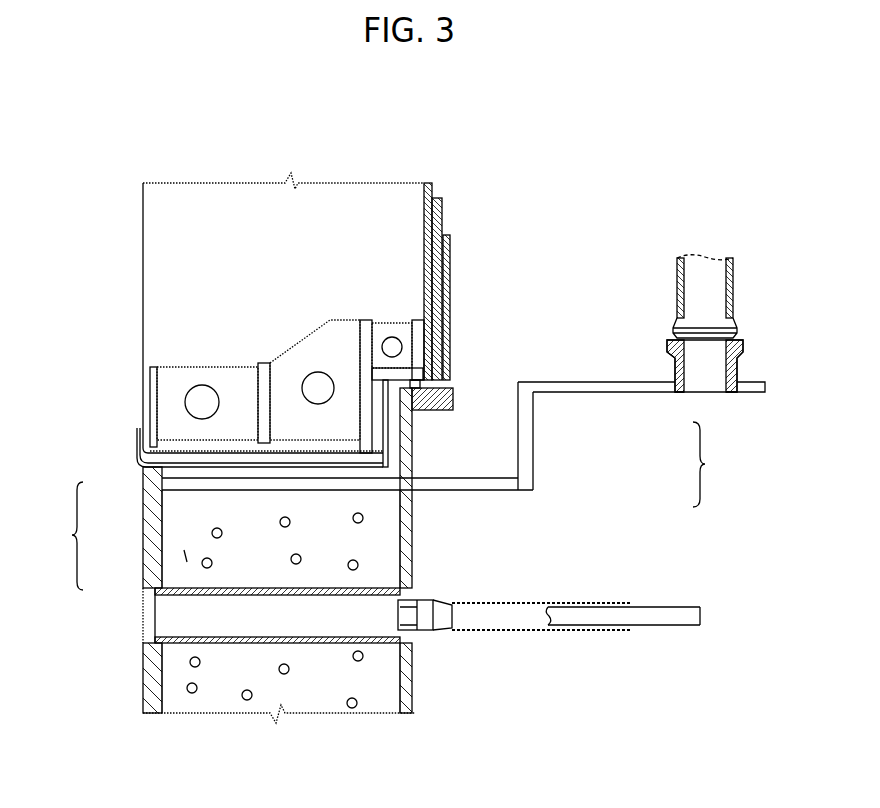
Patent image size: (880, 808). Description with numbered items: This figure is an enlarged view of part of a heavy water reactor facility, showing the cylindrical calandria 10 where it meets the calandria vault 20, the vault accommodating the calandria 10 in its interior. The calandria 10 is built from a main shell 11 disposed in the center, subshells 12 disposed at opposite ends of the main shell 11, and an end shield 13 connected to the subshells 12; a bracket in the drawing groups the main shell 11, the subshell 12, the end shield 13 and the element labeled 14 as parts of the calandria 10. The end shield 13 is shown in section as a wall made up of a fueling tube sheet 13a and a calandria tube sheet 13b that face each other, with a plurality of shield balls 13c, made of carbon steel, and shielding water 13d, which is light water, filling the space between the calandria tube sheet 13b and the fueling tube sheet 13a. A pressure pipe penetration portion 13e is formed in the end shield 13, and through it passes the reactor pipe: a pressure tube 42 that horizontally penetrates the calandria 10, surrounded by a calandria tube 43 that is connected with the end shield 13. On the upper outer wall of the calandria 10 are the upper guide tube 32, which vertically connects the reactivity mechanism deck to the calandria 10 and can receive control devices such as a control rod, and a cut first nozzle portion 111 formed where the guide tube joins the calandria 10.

The calandria 10 is at (582, 451).
The main shell 11 is at (627, 388).
The subshell 12 is at (493, 488).
The end shield 13 is at (372, 555).
The fueling tube sheet 13a is at (162, 485).
The calandria tube sheet 13b is at (397, 677).
The shield balls 13c is at (212, 533).
The shielding water 13d is at (185, 555).
The pressure pipe penetration portion 13e is at (212, 588).
The vertical duct section 14 is at (527, 435).
The calandria vault 20 is at (147, 252).
The upper guide tube 32 is at (680, 280).
The pressure tube 42 is at (657, 627).
The calandria tube 43 is at (522, 630).
The first nozzle portion 111 is at (672, 370).